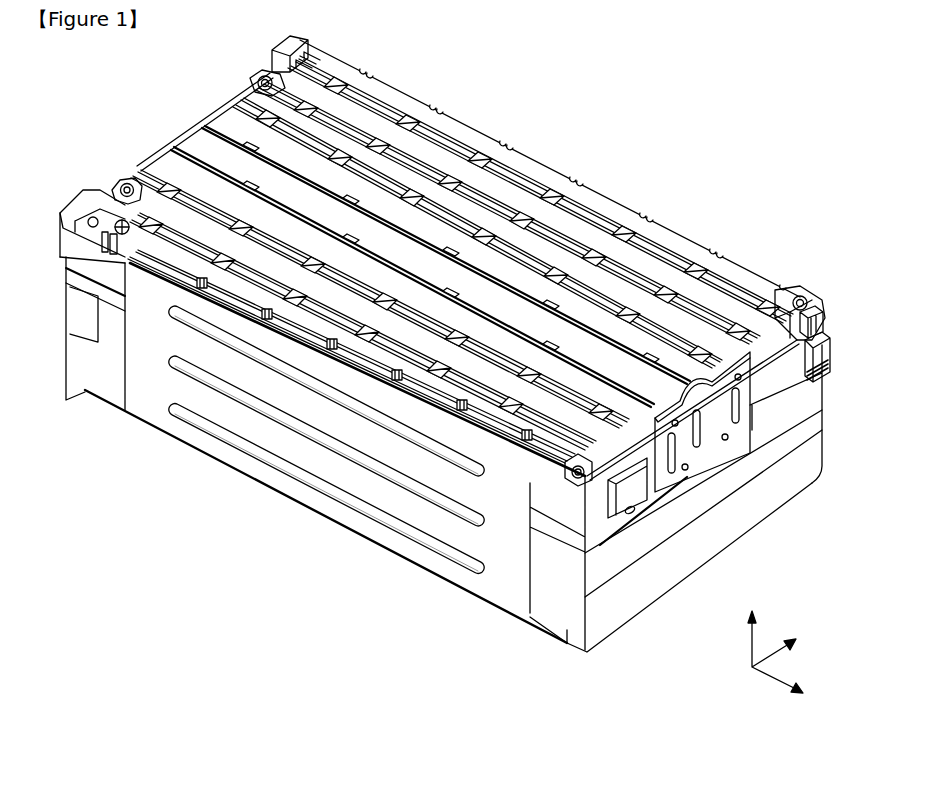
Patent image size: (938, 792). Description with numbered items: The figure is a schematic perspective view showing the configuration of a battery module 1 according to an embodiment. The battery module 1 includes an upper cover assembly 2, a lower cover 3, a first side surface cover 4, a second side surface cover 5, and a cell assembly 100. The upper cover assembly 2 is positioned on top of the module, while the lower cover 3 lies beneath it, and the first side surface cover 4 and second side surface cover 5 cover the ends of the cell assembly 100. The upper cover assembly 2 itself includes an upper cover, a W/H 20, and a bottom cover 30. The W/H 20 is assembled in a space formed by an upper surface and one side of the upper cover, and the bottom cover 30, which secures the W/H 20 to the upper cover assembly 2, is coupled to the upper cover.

The battery module 1 is at (588, 133).
The upper cover assembly 2 is at (718, 263).
The lower cover 3 is at (650, 604).
The first side surface cover 4 is at (820, 403).
The second side surface cover 5 is at (86, 316).
The W/H 20 is at (828, 324).
The bottom cover 30 is at (736, 350).
The cell assembly 100 is at (507, 586).